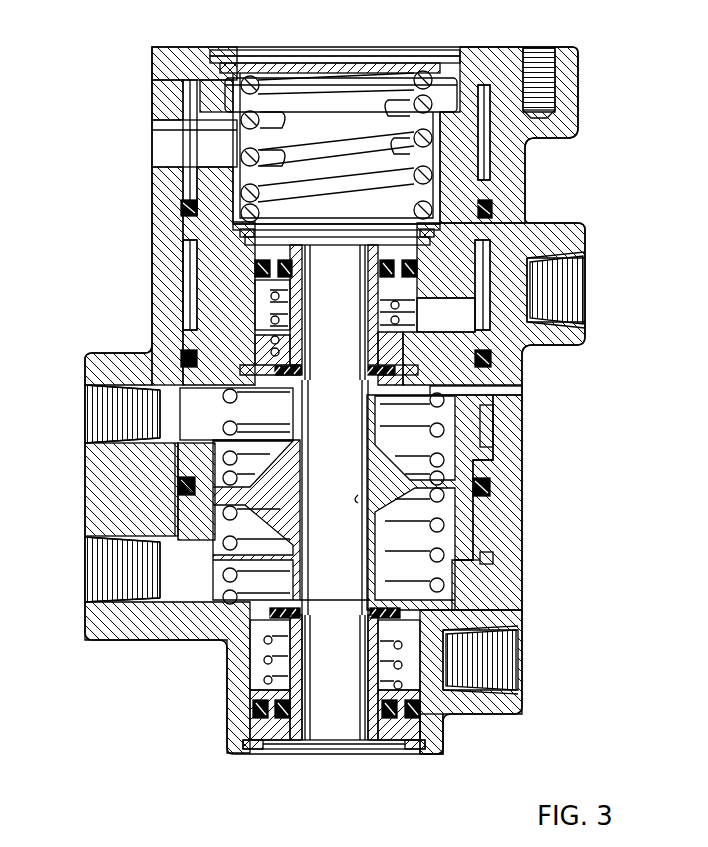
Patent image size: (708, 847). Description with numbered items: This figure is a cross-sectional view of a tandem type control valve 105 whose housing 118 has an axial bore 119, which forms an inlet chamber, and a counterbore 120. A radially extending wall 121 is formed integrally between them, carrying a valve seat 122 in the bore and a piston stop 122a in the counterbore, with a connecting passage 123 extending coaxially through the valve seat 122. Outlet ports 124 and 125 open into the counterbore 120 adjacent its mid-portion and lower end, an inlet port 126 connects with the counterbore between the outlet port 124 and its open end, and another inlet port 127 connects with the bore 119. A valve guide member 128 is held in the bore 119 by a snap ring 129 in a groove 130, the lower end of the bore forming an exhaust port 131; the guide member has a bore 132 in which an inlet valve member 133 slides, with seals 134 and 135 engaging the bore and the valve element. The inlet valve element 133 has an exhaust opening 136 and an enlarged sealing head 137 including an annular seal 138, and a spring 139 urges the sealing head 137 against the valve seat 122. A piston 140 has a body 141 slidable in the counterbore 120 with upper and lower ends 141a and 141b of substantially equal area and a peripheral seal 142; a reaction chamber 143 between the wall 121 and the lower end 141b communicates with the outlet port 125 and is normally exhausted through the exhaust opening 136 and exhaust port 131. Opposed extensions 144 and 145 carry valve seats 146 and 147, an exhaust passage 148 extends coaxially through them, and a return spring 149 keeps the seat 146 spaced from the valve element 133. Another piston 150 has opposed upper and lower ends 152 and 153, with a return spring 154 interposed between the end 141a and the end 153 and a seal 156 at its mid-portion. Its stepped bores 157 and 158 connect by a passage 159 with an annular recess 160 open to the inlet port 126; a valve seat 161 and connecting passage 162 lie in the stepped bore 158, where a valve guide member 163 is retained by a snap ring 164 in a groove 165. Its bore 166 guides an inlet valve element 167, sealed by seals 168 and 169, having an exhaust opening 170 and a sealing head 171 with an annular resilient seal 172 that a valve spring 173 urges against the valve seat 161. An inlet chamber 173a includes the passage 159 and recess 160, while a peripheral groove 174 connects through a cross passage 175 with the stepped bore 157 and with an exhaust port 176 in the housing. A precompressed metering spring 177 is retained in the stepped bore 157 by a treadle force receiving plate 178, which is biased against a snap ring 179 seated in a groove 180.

The tandem type control valve 105 is at (598, 213).
The housing 118 is at (570, 70).
The axial bore 119 is at (255, 672).
The counterbore 120 is at (492, 160).
The radially extending wall 121 is at (167, 674).
The valve seat 122 is at (292, 600).
The piston stop 122a is at (478, 562).
The connecting passage 123 is at (376, 575).
The outlet port 124 is at (85, 440).
The outlet port 125 is at (85, 594).
The inlet port 126 is at (575, 309).
The inlet port 127 is at (505, 690).
The valve guide member 128 is at (422, 742).
The snap ring 129 is at (262, 752).
The groove 130 is at (245, 745).
The exhaust port 131 is at (408, 752).
The bore 132 is at (382, 752).
The inlet valve member 133 is at (354, 714).
The seal 134 is at (255, 715).
The seal 135 is at (284, 722).
The exhaust opening 136 is at (368, 672).
The sealing head 137 is at (398, 612).
The annular seal 138 is at (364, 624).
The spring 139 is at (404, 665).
The piston 140 is at (178, 489).
The piston body 141 is at (196, 520).
The upper piston body end 141a is at (488, 432).
The lower piston body end 141b is at (493, 552).
The seal 142 is at (493, 489).
The reaction chamber 143 is at (292, 525).
The extension 144 is at (302, 578).
The extension 145 is at (364, 432).
The valve seat 146 is at (302, 612).
The valve seat 147 is at (326, 380).
The exhaust passage 148 is at (360, 497).
The return spring 149 is at (455, 578).
The piston 150 is at (345, 114).
The upper piston body end 152 is at (470, 56).
The lower piston body end 153 is at (492, 396).
The return spring 154 is at (222, 460).
The seal 156 is at (493, 362).
The stepped bore 157 is at (412, 152).
The stepped bore 158 is at (258, 312).
The passage 159 is at (478, 300).
The annular recess 160 is at (182, 265).
The valve seat 161 is at (430, 408).
The connecting passage 162 is at (292, 392).
The valve guide member 163 is at (270, 236).
The snap ring 164 is at (416, 238).
The groove 165 is at (252, 244).
The bore 166 is at (390, 236).
The inlet valve element 167 is at (354, 287).
The seal 168 is at (262, 268).
The seal 169 is at (405, 284).
The exhaust opening 170 is at (368, 315).
The sealing head 171 is at (398, 372).
The annular resilient seal 172 is at (360, 365).
The valve spring 173 is at (400, 331).
The inlet chamber 173a is at (272, 340).
The peripheral groove 174 is at (185, 99).
The cross passage 175 is at (268, 130).
The exhaust port 176 is at (162, 131).
The metering spring 177 is at (397, 98).
The treadle force receiving plate 178 is at (365, 66).
The snap ring 179 is at (290, 34).
The groove 180 is at (216, 34).